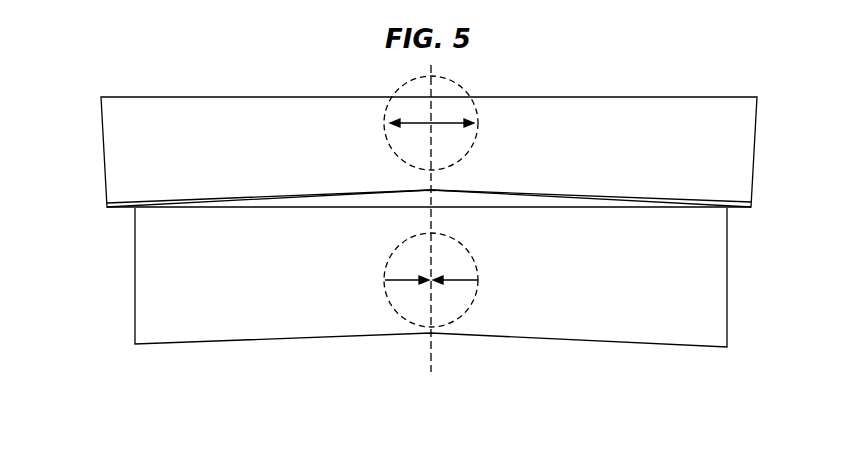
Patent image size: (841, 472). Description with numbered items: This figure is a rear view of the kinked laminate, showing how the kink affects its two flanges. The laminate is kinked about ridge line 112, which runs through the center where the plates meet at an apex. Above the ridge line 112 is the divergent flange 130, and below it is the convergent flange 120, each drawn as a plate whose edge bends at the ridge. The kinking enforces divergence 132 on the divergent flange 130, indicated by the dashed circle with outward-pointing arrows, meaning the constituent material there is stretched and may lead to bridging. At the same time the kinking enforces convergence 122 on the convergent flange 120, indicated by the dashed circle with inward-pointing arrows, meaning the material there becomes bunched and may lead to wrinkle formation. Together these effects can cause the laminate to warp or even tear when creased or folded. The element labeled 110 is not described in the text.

The lower surface layer of upper plate 110 is at (663, 205).
The ridge line 112 is at (437, 192).
The convergent flange 120 is at (160, 303).
The convergence 122 is at (478, 284).
The divergent flange 130 is at (620, 95).
The divergence 132 is at (455, 82).